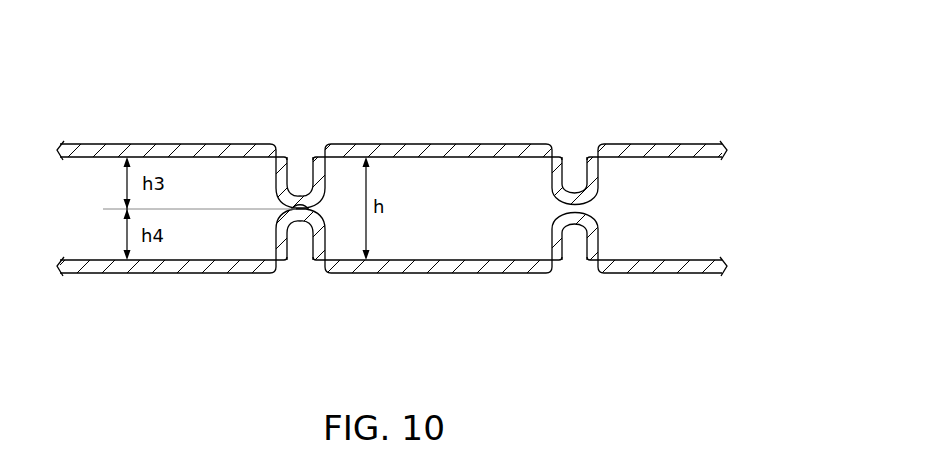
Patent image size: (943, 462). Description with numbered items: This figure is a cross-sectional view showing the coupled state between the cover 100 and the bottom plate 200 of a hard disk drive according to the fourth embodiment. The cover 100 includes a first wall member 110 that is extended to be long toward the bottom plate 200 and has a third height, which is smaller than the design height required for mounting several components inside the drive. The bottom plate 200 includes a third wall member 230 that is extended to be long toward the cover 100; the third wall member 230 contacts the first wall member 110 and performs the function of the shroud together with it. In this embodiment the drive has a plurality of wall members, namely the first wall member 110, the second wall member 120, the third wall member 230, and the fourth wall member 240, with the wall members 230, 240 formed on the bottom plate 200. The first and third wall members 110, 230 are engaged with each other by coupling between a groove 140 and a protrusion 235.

The cover 100 is at (442, 148).
The first wall member 110 is at (280, 182).
The second wall member 120 is at (575, 165).
The groove 140 is at (329, 200).
The bottom plate 200 is at (438, 276).
The third wall member 230 is at (280, 224).
The protrusion 235 is at (306, 214).
The fourth wall member 240 is at (580, 248).